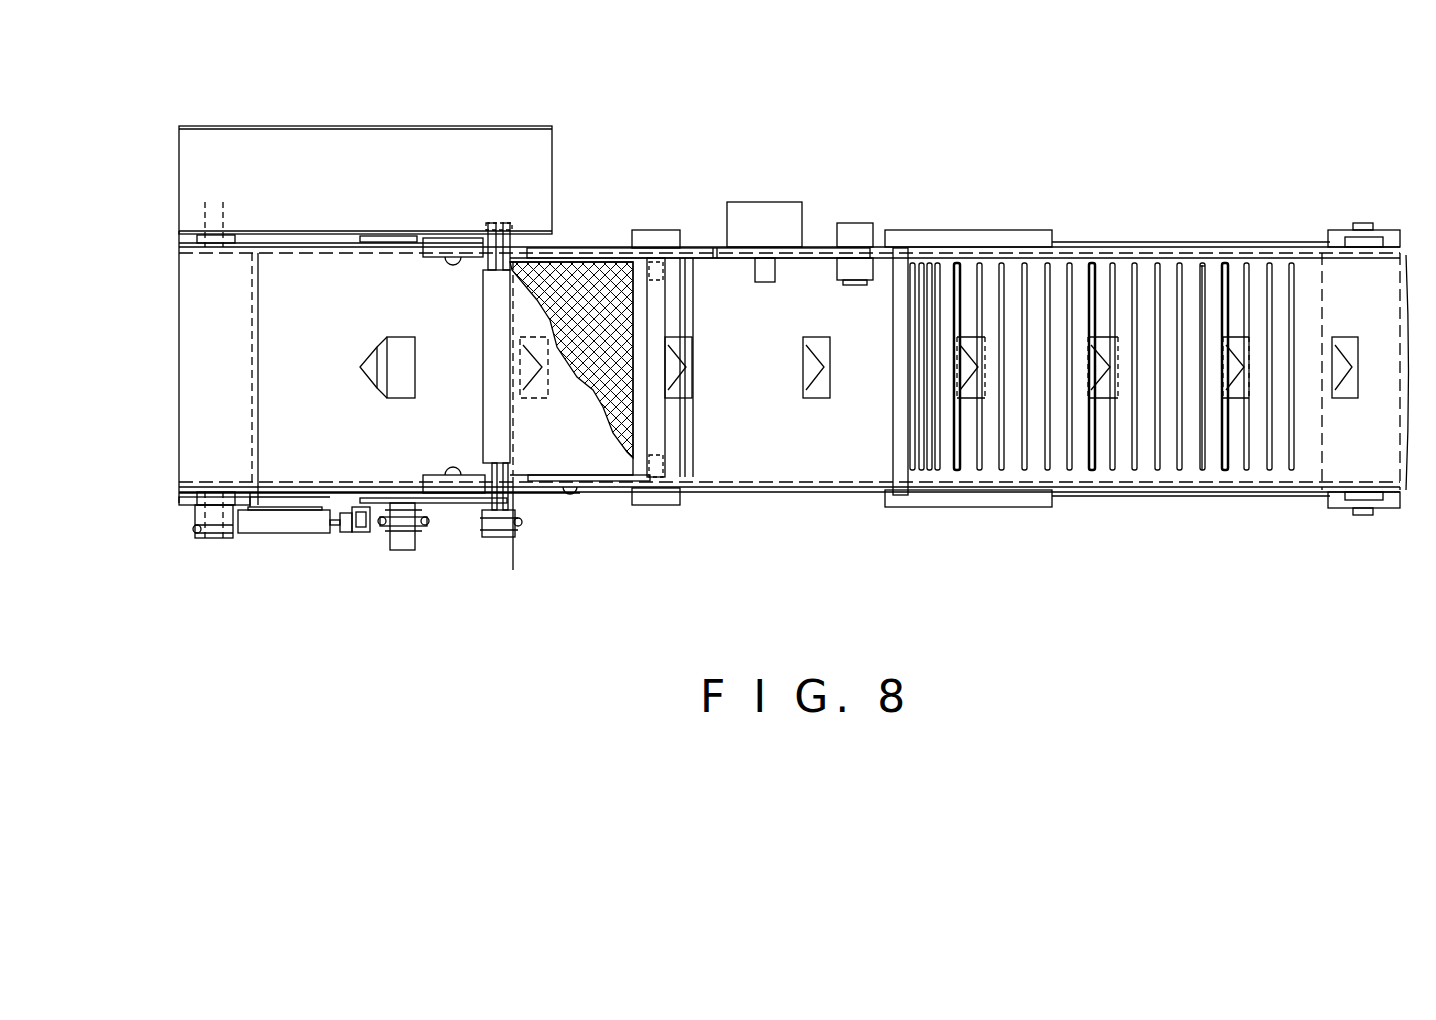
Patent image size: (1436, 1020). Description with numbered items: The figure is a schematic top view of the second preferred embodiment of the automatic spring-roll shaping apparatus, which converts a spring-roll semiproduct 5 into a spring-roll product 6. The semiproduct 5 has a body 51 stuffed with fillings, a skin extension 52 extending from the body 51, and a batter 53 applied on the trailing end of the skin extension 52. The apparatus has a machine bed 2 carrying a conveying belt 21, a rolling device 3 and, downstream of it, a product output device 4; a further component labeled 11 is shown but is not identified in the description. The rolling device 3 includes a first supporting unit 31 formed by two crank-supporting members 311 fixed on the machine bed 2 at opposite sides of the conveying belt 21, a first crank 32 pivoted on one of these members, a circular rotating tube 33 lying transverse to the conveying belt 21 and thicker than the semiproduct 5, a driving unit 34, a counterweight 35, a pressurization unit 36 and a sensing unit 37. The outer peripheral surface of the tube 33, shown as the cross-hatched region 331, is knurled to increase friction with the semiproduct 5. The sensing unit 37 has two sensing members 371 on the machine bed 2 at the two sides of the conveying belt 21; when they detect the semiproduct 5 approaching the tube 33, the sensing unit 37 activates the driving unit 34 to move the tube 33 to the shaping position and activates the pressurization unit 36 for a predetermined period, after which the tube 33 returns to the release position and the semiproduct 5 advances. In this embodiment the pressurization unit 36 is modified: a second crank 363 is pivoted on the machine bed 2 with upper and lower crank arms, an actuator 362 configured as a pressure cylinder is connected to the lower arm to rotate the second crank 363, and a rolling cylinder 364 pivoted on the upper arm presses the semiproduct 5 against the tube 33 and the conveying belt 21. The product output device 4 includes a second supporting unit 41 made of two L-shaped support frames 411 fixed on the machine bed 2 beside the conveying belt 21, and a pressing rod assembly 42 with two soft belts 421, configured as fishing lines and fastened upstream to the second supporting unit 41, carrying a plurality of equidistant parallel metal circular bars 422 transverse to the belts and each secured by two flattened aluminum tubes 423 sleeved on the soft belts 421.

The machine bed 2 is at (276, 516).
The conveying belt 21 is at (310, 498).
The rolling device 3 is at (717, 319).
The first supporting unit 31 is at (672, 215).
The crank-supporting members 311 is at (648, 238).
The first crank 32 is at (707, 252).
The circular rotating tube 33 is at (603, 443).
The mesh guide wall 331 is at (603, 287).
The driving unit 34 is at (788, 218).
The counterweight 35 is at (862, 233).
The pressurization unit 36 is at (498, 558).
The actuator 362 is at (322, 522).
The second crank 363 is at (388, 235).
The rolling cylinder 364 is at (510, 537).
The sensing unit 37 is at (451, 518).
The sensing members 371 is at (458, 247).
The product output device 4 is at (1107, 311).
The second supporting unit 41 is at (1012, 216).
The L-shaped support frames 411 is at (982, 228).
The pressing rod assembly 42 is at (1110, 362).
The soft belts 421 is at (1195, 270).
The circular bars 422 is at (1202, 268).
The aluminum tubes 423 is at (1207, 270).
The spring-roll semiproduct 5 is at (348, 340).
The body 51 is at (404, 350).
The skin extension 52 is at (380, 345).
The batter 53 is at (360, 366).
The spring-roll product 6 is at (972, 345).
The frame rail 11 is at (1242, 493).